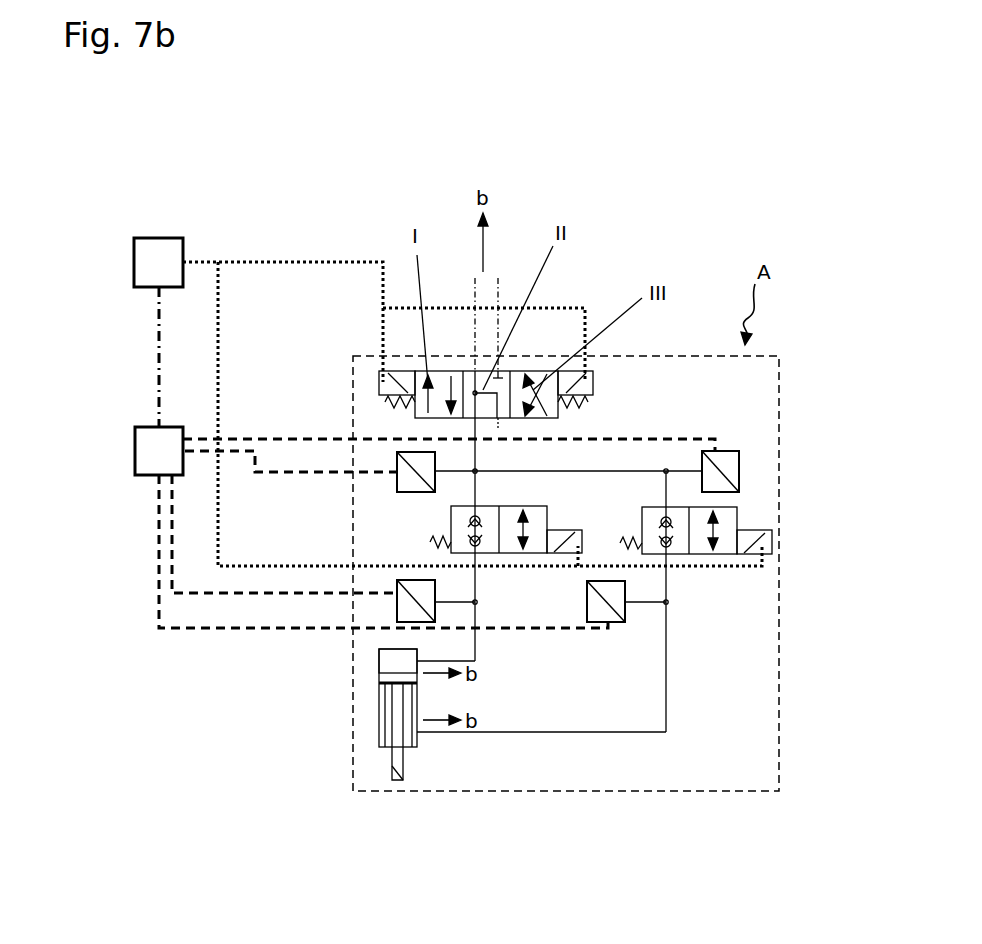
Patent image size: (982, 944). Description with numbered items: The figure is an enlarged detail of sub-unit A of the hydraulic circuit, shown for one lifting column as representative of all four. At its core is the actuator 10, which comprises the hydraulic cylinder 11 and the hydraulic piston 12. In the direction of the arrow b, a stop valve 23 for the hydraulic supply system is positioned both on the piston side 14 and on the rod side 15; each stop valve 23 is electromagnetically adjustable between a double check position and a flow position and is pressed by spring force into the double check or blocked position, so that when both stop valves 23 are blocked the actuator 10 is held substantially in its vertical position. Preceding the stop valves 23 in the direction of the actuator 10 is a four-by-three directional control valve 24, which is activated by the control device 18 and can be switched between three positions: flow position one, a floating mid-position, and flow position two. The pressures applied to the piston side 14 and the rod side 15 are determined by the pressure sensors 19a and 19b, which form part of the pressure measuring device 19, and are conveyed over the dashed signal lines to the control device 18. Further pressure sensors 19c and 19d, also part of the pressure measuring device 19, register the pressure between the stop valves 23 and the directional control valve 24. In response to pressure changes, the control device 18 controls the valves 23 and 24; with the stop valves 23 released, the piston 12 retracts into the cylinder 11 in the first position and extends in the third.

The actuator 10 is at (390, 815).
The hydraulic cylinder 11 is at (378, 708).
The hydraulic piston 12 is at (398, 770).
The piston side 14 is at (378, 662).
The rod side 15 is at (378, 735).
The control device 18 is at (157, 250).
The pressure measuring device 19 is at (146, 452).
The pressure sensor 19a is at (397, 620).
The pressure sensor 19b is at (613, 603).
The pressure sensor 19c is at (397, 468).
The pressure sensor 19d is at (740, 470).
The stop valve 23 is at (450, 530).
The 4/3 directional control valve 24 is at (543, 398).